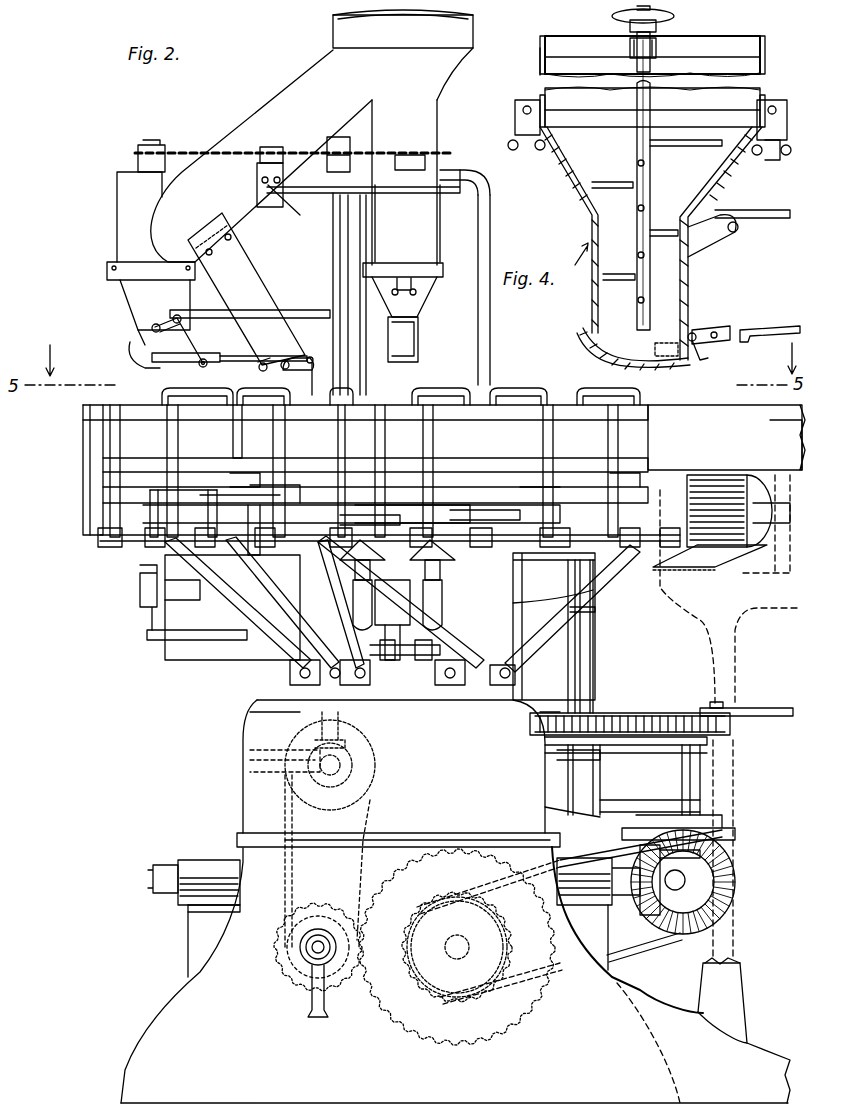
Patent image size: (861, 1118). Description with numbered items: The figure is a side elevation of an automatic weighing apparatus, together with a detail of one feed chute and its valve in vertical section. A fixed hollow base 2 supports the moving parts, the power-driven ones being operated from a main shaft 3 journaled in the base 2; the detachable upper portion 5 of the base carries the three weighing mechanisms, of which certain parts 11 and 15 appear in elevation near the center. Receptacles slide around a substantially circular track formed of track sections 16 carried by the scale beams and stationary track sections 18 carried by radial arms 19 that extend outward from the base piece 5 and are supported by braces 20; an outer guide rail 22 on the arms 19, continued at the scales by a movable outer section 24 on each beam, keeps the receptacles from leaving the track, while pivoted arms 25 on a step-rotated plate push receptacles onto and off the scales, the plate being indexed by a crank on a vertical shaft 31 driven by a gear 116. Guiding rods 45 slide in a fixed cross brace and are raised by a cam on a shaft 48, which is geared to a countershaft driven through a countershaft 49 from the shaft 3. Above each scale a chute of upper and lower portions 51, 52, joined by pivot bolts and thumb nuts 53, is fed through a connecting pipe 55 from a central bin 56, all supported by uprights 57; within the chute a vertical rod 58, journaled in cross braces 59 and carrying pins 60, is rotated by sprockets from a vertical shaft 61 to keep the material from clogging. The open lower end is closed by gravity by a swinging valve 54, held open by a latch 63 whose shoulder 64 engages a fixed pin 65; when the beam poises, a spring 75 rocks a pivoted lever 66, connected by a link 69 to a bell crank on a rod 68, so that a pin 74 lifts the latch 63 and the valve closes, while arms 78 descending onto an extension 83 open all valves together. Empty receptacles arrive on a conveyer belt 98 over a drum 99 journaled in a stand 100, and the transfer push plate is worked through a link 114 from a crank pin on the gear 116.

In FIG. 2, the base 2 is at (175, 1010).
In FIG. 2, the shaft 3 is at (315, 950).
In FIG. 2, the upper portion of the base 5 is at (472, 825).
In FIG. 2, the conical member 11 is at (443, 580).
In FIG. 2, the lever 15 is at (178, 642).
In FIG. 2, the track sections 16 is at (400, 500).
In FIG. 2, the stationary track sections 18 is at (200, 498).
In FIG. 2, the radial arms 19 is at (120, 548).
In FIG. 2, the braces 20 is at (272, 590).
In FIG. 2, the outer guide rail 22 is at (138, 410).
In FIG. 2, the outer guide rail section 24 is at (95, 420).
In FIG. 2, the arms 25 is at (218, 392).
In FIG. 2, the vertical shaft 31 is at (593, 665).
In FIG. 2, the guiding rods 45 is at (412, 600).
In FIG. 2, the shaft 48 is at (148, 878).
In FIG. 2, the countershaft 49 is at (682, 882).
In FIG. 2, the upper chute portion 51 is at (120, 218).
In FIG. 4, the upper chute portion 51 is at (545, 68).
In FIG. 2, the lower chute portion 52 is at (135, 298).
In FIG. 4, the lower chute portion 52 is at (567, 185).
In FIG. 4, the pivot bolts and thumb nuts 53 is at (518, 130).
In FIG. 2, the valve 54 is at (135, 352).
In FIG. 4, the valve 54 is at (590, 355).
In FIG. 2, the connecting pipe 55 is at (252, 118).
In FIG. 2, the central bin 56 is at (340, 32).
In FIG. 2, the uprights 57 is at (352, 245).
In FIG. 2, the vertical rod 58 is at (143, 160).
In FIG. 4, the vertical rod 58 is at (635, 147).
In FIG. 4, the cross braces 59 is at (575, 45).
In FIG. 4, the pins 60 is at (685, 145).
In FIG. 2, the vertical shaft 61 is at (333, 208).
In FIG. 2, the latch 63 is at (208, 358).
In FIG. 4, the latch 63 is at (722, 330).
In FIG. 2, the shoulder 64 is at (228, 364).
In FIG. 4, the shoulder 64 is at (750, 344).
In FIG. 2, the fixed pin 65 is at (195, 364).
In FIG. 2, the pivoted lever 66 is at (292, 358).
In FIG. 2, the rod 68 is at (418, 648).
In FIG. 2, the link 69 is at (312, 380).
In FIG. 2, the pin 74 is at (261, 374).
In FIG. 2, the spring 75 is at (262, 340).
In FIG. 2, the arms 78 is at (285, 310).
In FIG. 4, the arms 78 is at (775, 220).
In FIG. 4, the extension 83 is at (708, 240).
In FIG. 2, the conveyer belt 98 is at (722, 475).
In FIG. 2, the drum 99 is at (758, 540).
In FIG. 2, the stand 100 is at (738, 998).
In FIG. 2, the link 114 is at (768, 718).
In FIG. 2, the gear 116 is at (648, 715).